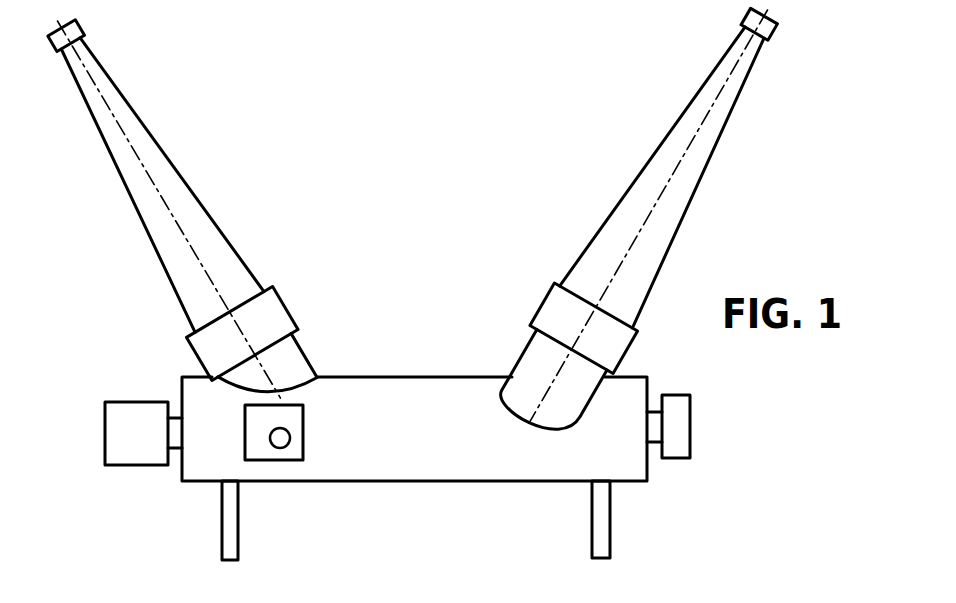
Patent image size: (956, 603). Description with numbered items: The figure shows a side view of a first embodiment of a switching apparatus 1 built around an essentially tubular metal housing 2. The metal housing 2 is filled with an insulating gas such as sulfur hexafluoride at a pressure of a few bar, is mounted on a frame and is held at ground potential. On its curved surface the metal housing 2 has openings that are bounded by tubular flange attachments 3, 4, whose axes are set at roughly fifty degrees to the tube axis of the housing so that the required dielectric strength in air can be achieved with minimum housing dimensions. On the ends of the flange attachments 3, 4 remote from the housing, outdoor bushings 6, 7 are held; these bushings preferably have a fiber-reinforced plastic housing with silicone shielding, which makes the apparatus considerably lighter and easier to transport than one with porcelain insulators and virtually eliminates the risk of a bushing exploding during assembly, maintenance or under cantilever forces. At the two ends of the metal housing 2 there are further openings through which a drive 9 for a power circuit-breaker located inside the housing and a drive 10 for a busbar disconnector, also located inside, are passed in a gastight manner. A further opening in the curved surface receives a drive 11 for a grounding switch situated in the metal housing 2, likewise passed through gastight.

The switching apparatus 1 is at (423, 198).
The metal housing 2 is at (415, 448).
The tubular flange attachment 3 is at (292, 365).
The tubular flange attachment 4 is at (538, 367).
The outdoor bushing 6 is at (160, 167).
The outdoor bushing 7 is at (668, 158).
The drive for power circuit-breaker 9 is at (136, 450).
The drive for busbar disconnector 10 is at (677, 433).
The drive for grounding switch 11 is at (280, 438).